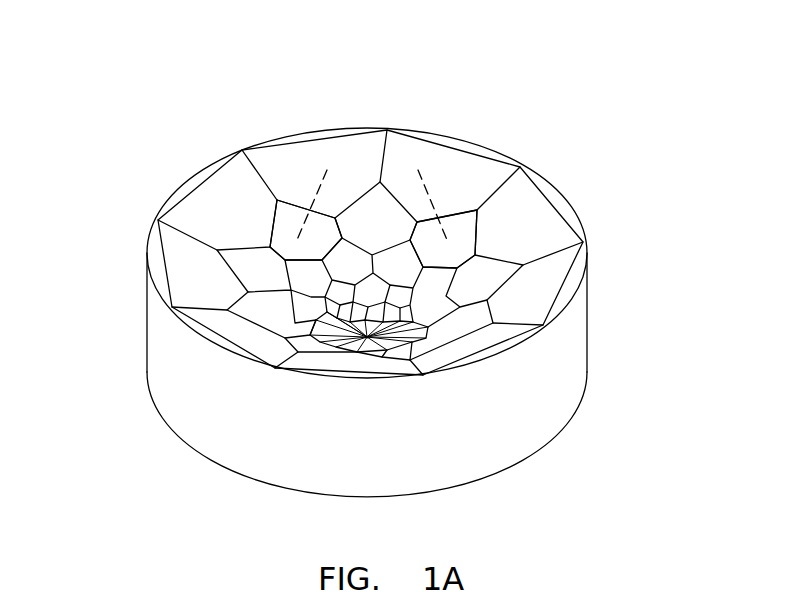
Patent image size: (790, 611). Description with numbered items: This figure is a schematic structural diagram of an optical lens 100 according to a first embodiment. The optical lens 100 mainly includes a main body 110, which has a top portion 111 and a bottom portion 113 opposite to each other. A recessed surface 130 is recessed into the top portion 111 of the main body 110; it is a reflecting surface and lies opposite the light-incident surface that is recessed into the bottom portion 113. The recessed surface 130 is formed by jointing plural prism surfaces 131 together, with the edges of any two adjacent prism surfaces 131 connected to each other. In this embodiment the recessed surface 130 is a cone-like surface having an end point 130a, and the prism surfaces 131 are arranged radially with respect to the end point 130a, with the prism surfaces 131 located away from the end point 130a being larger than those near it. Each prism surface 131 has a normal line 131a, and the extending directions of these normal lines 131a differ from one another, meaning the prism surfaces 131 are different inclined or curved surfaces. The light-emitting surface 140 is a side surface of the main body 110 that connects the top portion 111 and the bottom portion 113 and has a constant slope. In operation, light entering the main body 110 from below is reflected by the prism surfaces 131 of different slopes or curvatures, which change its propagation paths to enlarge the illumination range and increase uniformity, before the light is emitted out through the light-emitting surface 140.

The optical lens 100 is at (125, 81).
The main body 110 is at (411, 312).
The top portion 111 is at (563, 192).
The bottom portion 113 is at (574, 433).
The light-emitting surface 140 is at (591, 316).
The recessed surface 130 is at (462, 190).
The end point 130a is at (360, 338).
The prism surfaces 131 is at (291, 217).
The normal line 131a is at (322, 188).